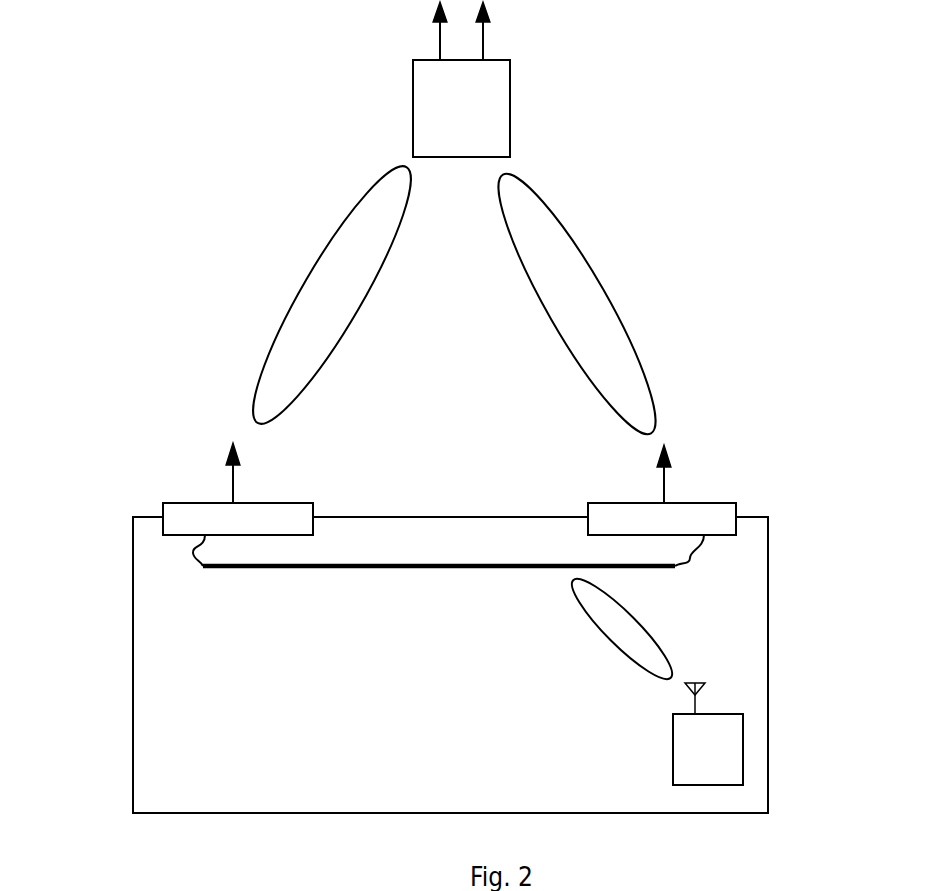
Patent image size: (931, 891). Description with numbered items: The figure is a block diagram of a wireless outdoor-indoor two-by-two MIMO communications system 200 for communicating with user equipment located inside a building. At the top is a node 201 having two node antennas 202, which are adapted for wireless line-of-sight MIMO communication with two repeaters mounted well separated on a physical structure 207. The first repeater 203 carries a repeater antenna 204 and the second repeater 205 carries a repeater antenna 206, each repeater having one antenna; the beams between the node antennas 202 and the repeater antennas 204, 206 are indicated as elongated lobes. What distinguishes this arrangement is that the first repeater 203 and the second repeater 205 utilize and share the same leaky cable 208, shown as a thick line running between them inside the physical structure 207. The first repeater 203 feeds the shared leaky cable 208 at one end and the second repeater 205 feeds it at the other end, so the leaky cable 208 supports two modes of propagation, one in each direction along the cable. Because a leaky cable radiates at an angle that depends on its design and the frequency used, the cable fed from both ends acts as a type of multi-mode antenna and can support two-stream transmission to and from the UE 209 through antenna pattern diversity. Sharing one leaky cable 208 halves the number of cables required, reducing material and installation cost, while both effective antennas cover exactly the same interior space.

The wireless outdoor-indoor 2-by-2 MIMO communications system 200 is at (243, 166).
The node 201 is at (413, 92).
The node antennas 202 is at (440, 40).
The first repeater 203 is at (163, 503).
The repeater antenna 204 is at (232, 478).
The second repeater 205 is at (736, 503).
The repeater antenna 206 is at (664, 487).
The physical structure 207 is at (132, 648).
The leaky cable 208 is at (470, 565).
The UE 209 is at (686, 778).